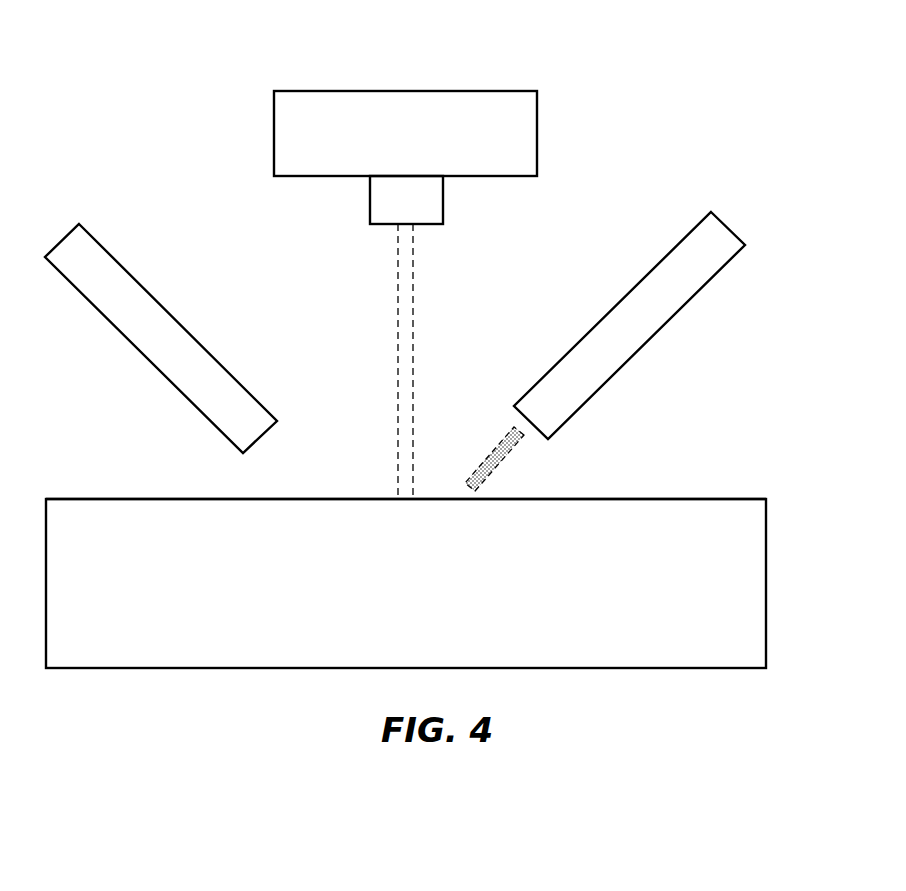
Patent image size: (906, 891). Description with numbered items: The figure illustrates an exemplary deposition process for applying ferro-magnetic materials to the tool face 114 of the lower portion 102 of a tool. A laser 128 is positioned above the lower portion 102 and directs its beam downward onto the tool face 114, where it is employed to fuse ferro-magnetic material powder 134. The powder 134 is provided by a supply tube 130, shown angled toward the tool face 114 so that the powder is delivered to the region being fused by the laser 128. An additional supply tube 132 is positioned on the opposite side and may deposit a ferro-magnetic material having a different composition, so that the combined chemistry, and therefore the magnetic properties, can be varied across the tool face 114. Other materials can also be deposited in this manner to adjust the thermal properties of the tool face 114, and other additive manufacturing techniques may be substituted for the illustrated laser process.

The laser 128 is at (407, 90).
The supply tube 130 is at (608, 308).
The additional supply tube 132 is at (180, 322).
The ferro-magnetic material powder 134 is at (482, 440).
The lower portion 102 is at (767, 585).
The tool face 114 is at (697, 497).